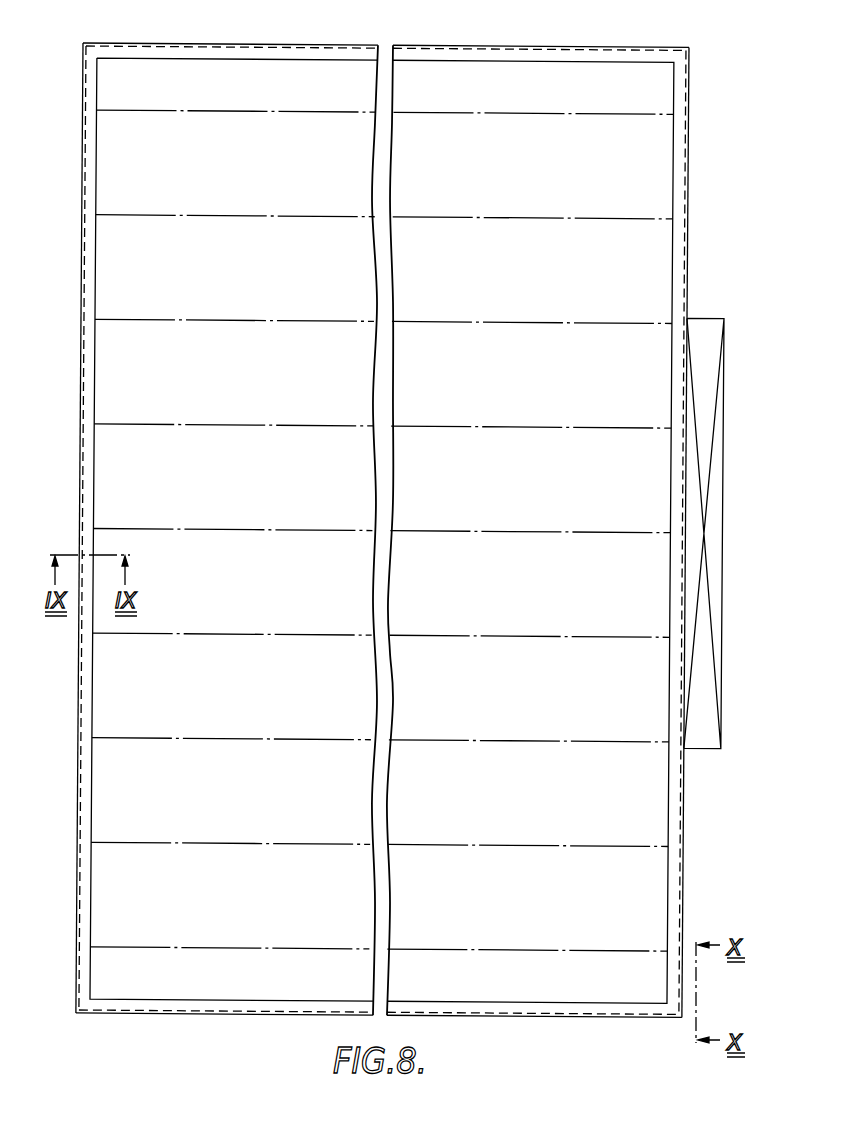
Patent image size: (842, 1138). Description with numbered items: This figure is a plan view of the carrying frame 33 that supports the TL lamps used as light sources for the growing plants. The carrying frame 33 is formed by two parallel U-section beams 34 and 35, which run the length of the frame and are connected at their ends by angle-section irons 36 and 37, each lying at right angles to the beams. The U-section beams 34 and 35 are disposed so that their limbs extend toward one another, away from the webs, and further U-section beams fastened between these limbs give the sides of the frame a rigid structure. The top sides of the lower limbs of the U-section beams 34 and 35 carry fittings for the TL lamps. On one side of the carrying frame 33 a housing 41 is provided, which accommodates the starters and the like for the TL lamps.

The carrying frame 33 is at (690, 156).
The U-section beam 34 is at (83, 268).
The U-section beam 35 is at (678, 202).
The angle-section iron 36 is at (606, 1004).
The angle-section iron 37 is at (514, 53).
The housing 41 is at (711, 314).